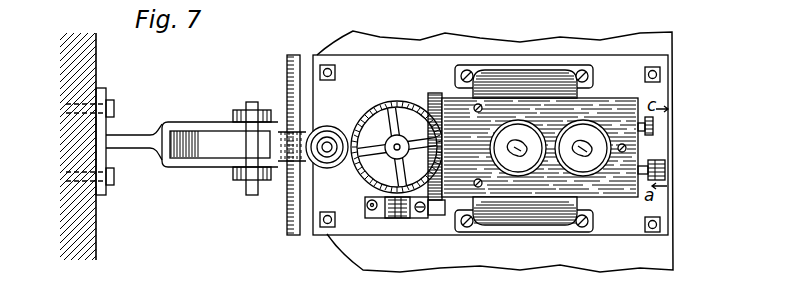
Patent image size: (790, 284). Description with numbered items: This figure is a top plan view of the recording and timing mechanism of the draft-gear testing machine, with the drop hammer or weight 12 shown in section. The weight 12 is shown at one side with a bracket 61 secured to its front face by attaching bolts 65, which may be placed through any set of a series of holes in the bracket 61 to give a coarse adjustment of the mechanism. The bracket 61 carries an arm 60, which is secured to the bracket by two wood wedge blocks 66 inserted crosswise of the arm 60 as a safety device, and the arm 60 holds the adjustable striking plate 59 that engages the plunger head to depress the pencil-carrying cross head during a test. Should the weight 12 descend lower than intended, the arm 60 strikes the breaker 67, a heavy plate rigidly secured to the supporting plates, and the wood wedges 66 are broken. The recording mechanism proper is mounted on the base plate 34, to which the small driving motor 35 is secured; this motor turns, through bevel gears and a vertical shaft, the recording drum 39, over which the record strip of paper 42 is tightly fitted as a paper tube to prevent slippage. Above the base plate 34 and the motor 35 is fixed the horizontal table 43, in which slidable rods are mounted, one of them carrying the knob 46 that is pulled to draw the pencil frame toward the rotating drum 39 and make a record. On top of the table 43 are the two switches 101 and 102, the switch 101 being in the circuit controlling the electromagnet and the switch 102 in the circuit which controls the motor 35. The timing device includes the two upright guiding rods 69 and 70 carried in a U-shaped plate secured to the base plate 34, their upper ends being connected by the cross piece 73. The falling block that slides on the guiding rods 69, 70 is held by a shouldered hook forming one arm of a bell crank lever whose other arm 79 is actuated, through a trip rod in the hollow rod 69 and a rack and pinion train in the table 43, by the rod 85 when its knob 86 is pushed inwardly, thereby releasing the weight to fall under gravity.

The weight 12 is at (68, 140).
The attaching bolts 65 is at (114, 108).
The bracket 61 is at (218, 160).
The arm 60 is at (204, 128).
The wood wedge blocks 66 is at (252, 195).
The breaker 67 is at (288, 178).
The plate 59 is at (331, 124).
The record strip of paper 42 is at (397, 101).
The recording drum 39 is at (368, 173).
The table 43 is at (433, 95).
The driving motor 35 is at (549, 226).
The switch 101 is at (600, 137).
The switch 102 is at (499, 156).
The knob 46 is at (653, 127).
The rod 85 is at (650, 164).
The knob 86 is at (665, 177).
The cross piece 73 is at (378, 216).
The guiding rod 70 is at (370, 210).
The arm of bell crank lever 79 is at (418, 213).
The guiding rod 69 is at (426, 213).
The base plate 34 is at (662, 203).